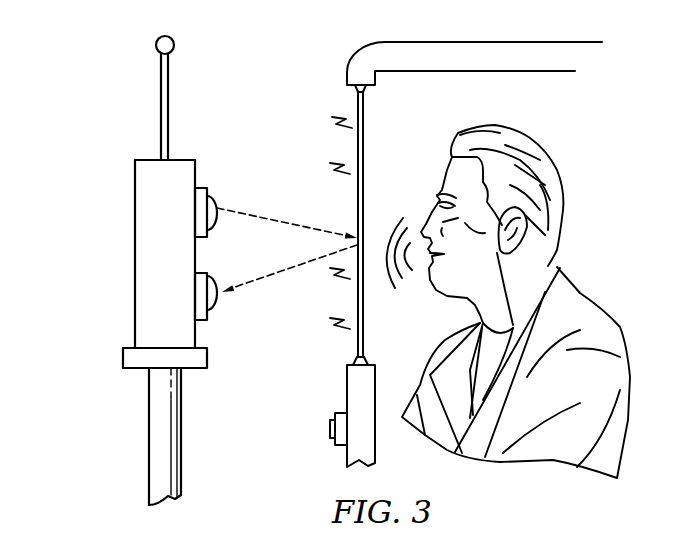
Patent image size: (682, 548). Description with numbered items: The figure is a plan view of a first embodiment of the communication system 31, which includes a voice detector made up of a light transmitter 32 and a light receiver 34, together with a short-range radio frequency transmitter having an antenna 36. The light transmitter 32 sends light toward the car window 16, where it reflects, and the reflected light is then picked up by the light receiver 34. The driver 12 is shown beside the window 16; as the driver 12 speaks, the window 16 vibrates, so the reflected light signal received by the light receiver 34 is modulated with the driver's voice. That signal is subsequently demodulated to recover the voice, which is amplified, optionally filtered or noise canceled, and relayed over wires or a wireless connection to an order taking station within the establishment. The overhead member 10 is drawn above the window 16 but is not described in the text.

The support arm 10 is at (538, 42).
The driver 12 is at (557, 167).
The car window 16 is at (357, 110).
The communication system 31 is at (148, 270).
The light transmitter 32 is at (215, 198).
The light receiver 34 is at (215, 308).
The antenna 36 is at (168, 93).